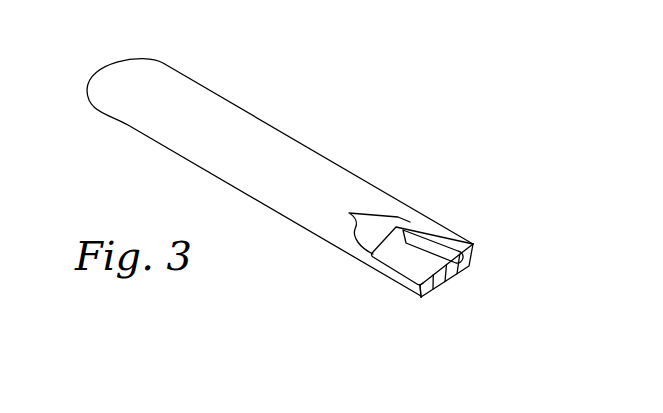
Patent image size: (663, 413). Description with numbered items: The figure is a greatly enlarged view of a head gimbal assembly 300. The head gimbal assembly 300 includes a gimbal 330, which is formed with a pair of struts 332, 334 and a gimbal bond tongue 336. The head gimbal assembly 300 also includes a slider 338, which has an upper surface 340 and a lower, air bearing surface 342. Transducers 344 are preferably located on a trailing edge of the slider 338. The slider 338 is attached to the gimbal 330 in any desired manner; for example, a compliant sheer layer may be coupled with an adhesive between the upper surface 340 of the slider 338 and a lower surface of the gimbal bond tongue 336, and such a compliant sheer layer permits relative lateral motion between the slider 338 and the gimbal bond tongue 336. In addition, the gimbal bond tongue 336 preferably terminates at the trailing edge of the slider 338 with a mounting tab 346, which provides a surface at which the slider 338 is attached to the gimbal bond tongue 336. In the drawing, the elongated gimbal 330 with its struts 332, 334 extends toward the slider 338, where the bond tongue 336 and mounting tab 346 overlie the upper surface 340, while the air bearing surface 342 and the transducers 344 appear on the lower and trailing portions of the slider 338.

The head gimbal assembly 300 is at (330, 103).
The gimbal 330 is at (222, 95).
The strut 332 is at (385, 256).
The strut 334 is at (428, 236).
The gimbal bond tongue 336 is at (474, 244).
The slider 338 is at (450, 295).
The upper surface 340 is at (427, 257).
The air bearing surface 342 is at (421, 298).
The transducers 344 is at (458, 278).
The mounting tab 346 is at (391, 236).